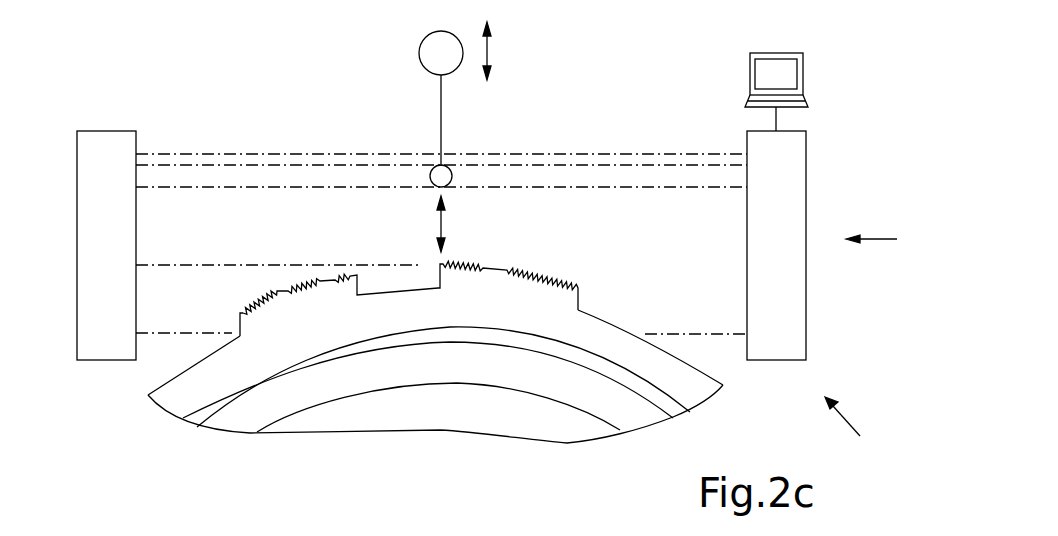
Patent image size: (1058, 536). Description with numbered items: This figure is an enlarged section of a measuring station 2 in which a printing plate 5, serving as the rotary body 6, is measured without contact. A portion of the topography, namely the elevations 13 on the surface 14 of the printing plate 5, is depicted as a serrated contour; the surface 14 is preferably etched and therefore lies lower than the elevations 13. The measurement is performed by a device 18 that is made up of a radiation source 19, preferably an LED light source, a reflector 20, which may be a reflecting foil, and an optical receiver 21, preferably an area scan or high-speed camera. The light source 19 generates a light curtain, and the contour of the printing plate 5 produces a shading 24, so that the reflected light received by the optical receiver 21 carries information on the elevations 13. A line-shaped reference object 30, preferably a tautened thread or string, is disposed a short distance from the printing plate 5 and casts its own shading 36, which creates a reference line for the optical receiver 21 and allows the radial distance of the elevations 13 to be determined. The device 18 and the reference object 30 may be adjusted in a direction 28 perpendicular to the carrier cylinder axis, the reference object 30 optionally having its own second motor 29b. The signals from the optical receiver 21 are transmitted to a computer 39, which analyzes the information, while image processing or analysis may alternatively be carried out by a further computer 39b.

The measuring station 2 is at (853, 431).
The printing plate 5 is at (435, 403).
The rotary body 6 is at (522, 317).
The elevations 13 is at (279, 292).
The surface 14 is at (200, 365).
The device 18 is at (891, 242).
The radiation source 19 is at (833, 233).
The reflector 20 is at (110, 151).
The optical receiver 21 is at (806, 310).
The shading 24 is at (165, 320).
The direction 28 is at (490, 48).
The second motor 29b is at (419, 48).
The reference object 30 is at (433, 173).
The shading of the reference object 36 is at (590, 177).
The computer 39 is at (709, 80).
The further computer 39b is at (750, 70).